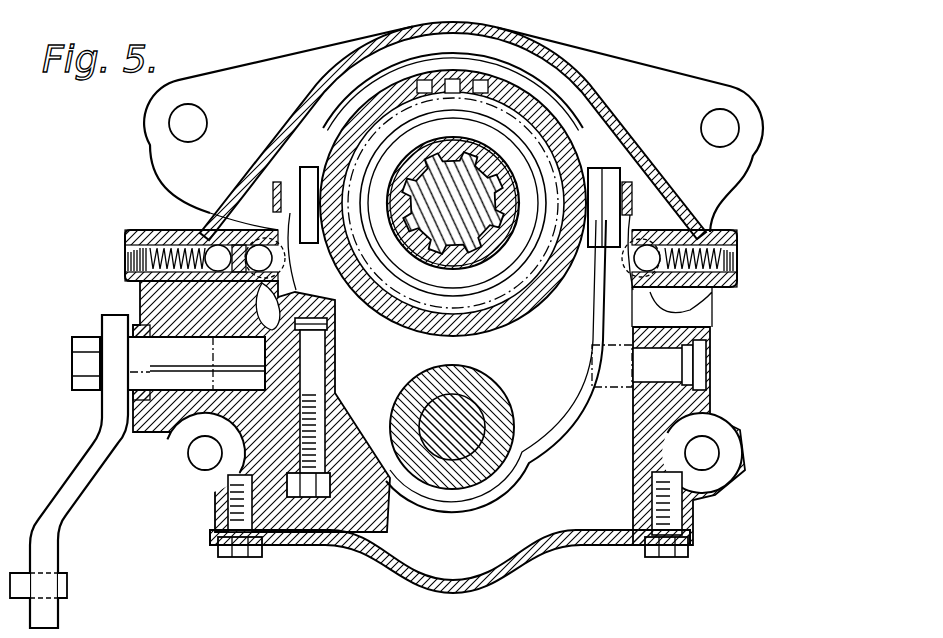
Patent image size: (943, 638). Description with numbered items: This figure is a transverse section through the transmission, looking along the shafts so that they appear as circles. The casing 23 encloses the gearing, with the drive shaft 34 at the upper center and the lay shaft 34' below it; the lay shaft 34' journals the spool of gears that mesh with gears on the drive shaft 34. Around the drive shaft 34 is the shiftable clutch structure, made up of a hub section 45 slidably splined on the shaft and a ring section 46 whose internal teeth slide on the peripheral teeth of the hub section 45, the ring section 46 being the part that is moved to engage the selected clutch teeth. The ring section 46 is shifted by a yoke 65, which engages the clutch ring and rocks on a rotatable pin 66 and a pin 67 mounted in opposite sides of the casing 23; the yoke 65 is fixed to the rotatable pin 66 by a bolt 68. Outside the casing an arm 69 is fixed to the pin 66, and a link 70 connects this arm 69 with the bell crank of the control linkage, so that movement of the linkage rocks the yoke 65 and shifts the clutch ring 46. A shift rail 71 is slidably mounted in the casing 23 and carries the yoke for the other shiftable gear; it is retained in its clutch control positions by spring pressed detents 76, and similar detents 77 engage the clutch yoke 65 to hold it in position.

The casing 23 is at (452, 592).
The shift rail 71 is at (210, 213).
The drive shaft 34 is at (453, 208).
The lay shaft 34' is at (469, 427).
The hub section 45 is at (472, 265).
The ring section 46 is at (395, 333).
The spring pressed detents 76 is at (200, 222).
The detents 77 is at (647, 250).
The rotatable pin 66 is at (182, 368).
The bolt 68 is at (315, 362).
The arm 69 is at (70, 482).
The link 70 is at (62, 577).
The yoke 65 is at (573, 466).
The pin 67 is at (673, 359).